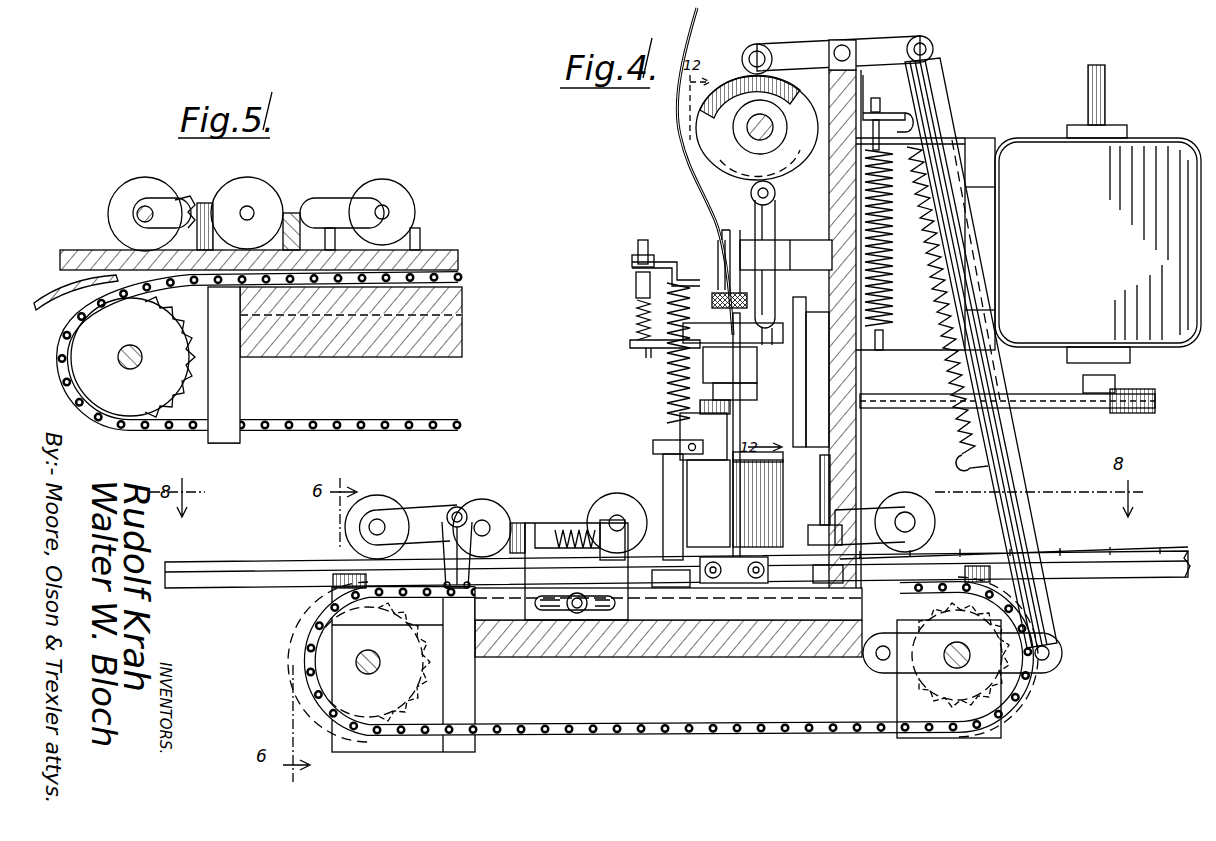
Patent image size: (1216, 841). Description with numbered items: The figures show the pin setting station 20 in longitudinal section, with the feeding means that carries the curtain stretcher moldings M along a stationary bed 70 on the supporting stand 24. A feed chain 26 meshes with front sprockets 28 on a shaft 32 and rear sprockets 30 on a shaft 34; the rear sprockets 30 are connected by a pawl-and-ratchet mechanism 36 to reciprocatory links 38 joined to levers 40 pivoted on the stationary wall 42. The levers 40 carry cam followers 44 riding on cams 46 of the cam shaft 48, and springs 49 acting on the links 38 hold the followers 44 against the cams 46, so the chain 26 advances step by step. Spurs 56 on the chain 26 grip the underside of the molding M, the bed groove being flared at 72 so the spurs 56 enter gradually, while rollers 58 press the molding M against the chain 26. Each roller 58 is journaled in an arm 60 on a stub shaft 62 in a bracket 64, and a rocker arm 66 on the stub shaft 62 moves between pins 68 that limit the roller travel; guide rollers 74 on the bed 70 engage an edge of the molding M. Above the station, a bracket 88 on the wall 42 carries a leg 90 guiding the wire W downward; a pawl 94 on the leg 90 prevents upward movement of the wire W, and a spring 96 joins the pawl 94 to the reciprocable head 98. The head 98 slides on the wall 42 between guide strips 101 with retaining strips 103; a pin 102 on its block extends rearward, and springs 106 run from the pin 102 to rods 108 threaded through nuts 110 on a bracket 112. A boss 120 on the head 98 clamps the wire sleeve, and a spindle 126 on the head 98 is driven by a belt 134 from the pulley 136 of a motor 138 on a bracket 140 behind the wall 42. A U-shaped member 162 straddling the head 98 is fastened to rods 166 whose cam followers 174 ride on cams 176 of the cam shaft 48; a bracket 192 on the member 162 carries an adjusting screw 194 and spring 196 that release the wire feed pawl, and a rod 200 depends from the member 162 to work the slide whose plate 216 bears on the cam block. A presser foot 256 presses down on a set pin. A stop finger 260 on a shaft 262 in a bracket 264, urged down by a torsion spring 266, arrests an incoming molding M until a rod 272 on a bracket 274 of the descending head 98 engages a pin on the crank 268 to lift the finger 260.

In FIG. 4, the wire W is at (676, 116).
In FIG. 5, the molding M is at (430, 250).
In FIG. 4, the molding M is at (250, 561).
In FIG. 4, the pin setting station 20 is at (786, 570).
In FIG. 4, the stand 24 is at (668, 590).
In FIG. 5, the feed chain 26 is at (452, 279).
In FIG. 4, the feed chain 26 is at (666, 738).
In FIG. 5, the sprockets 28 is at (108, 434).
In FIG. 4, the sprockets 28 is at (312, 678).
In FIG. 4, the sprockets 30 is at (1025, 680).
In FIG. 4, the shaft 32 is at (368, 674).
In FIG. 4, the shaft 34 is at (952, 664).
In FIG. 4, the pawl-and-ratchet mechanism 36 is at (876, 680).
In FIG. 5, the reciprocatory links 38 is at (130, 345).
In FIG. 4, the reciprocatory links 38 is at (1010, 428).
In FIG. 4, the levers 40 is at (866, 48).
In FIG. 4, the stationary wall 42 is at (860, 428).
In FIG. 4, the cam followers 44 is at (768, 28).
In FIG. 4, the cams 46 is at (730, 82).
In FIG. 4, the cam shaft 48 is at (768, 140).
In FIG. 4, the springs 49 is at (960, 448).
In FIG. 5, the spurs 56 is at (450, 252).
In FIG. 5, the rollers 58 is at (125, 196).
In FIG. 4, the rollers 58 is at (388, 500).
In FIG. 5, the arm 60 is at (198, 200).
In FIG. 4, the arm 60 is at (440, 512).
In FIG. 4, the stub shaft 62 is at (468, 512).
In FIG. 4, the bracket 64 is at (476, 680).
In FIG. 4, the rocker arm 66 is at (456, 590).
In FIG. 4, the pins 68 is at (444, 590).
In FIG. 5, the bed 70 is at (458, 300).
In FIG. 4, the bed 70 is at (762, 612).
In FIG. 5, the flared groove end 72 is at (238, 295).
In FIG. 4, the guide rollers 74 is at (338, 573).
In FIG. 4, the bracket 88 is at (795, 240).
In FIG. 4, the leg 90 is at (720, 236).
In FIG. 4, the pawl 94 is at (716, 275).
In FIG. 4, the spring 96 is at (668, 402).
In FIG. 4, the head 98 is at (712, 438).
In FIG. 4, the guide strips 101 is at (860, 443).
In FIG. 4, the pin 102 is at (878, 356).
In FIG. 4, the retaining strips 103 is at (798, 303).
In FIG. 4, the springs 106 is at (889, 305).
In FIG. 4, the rods 108 is at (880, 102).
In FIG. 4, the nuts 110 is at (882, 106).
In FIG. 4, the bracket 112 is at (885, 116).
In FIG. 4, the boss 120 is at (718, 388).
In FIG. 4, the spindle 126 is at (722, 508).
In FIG. 4, the belt 134 is at (1022, 400).
In FIG. 4, the pulley 136 is at (1140, 394).
In FIG. 4, the motor 138 is at (1120, 260).
In FIG. 4, the bracket 140 is at (980, 176).
In FIG. 4, the U-shaped member 162 is at (708, 365).
In FIG. 4, the rods 166 is at (754, 214).
In FIG. 4, the cam followers 174 is at (750, 194).
In FIG. 4, the cams 176 is at (722, 140).
In FIG. 4, the bracket 192 is at (640, 254).
In FIG. 4, the adjusting screw 194 is at (636, 282).
In FIG. 4, the spring 196 is at (636, 312).
In FIG. 4, the rod 200 is at (758, 499).
In FIG. 4, the plate 216 is at (718, 590).
In FIG. 4, the presser foot 256 is at (822, 515).
In FIG. 5, the stop finger 260 is at (291, 210).
In FIG. 4, the stop finger 260 is at (522, 522).
In FIG. 4, the shaft 262 is at (572, 524).
In FIG. 4, the bracket 264 is at (598, 622).
In FIG. 4, the torsion spring 266 is at (600, 560).
In FIG. 4, the crank 268 is at (648, 622).
In FIG. 4, the rod 272 is at (655, 447).
In FIG. 4, the bracket 274 is at (680, 432).